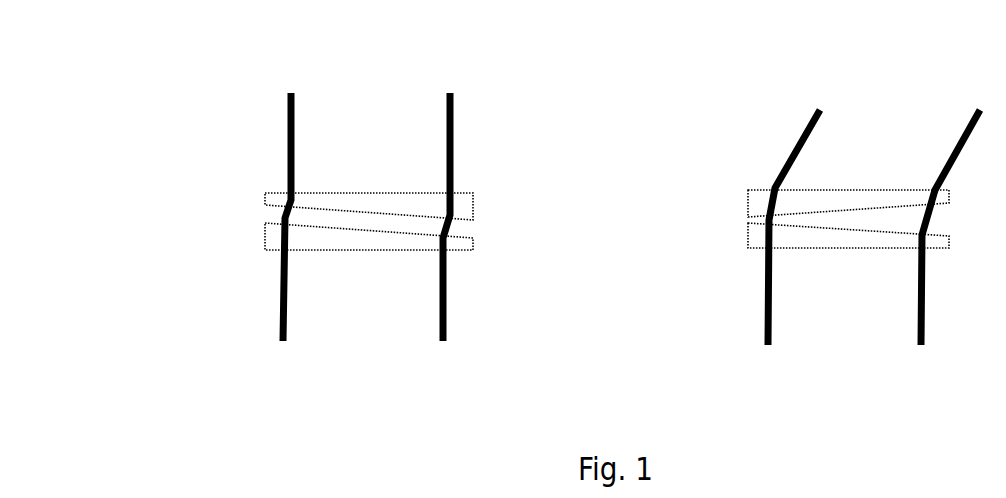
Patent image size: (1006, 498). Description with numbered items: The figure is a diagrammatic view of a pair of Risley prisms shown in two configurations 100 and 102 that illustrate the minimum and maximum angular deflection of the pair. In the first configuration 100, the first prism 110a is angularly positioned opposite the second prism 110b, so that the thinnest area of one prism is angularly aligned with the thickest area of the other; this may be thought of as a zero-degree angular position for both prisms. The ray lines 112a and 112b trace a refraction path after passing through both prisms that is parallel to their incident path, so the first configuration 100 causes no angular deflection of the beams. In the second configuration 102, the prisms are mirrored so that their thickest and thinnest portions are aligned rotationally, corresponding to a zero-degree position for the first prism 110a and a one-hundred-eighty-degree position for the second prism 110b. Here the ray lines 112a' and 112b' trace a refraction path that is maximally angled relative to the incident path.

The first configuration 100 is at (204, 88).
The second configuration 102 is at (722, 87).
The first prism 110a is at (753, 205).
The second prism 110b is at (753, 238).
The ray line 112a is at (318, 226).
The ray line 112b is at (477, 224).
The ray line 112a' is at (807, 232).
The ray line 112b' is at (959, 232).